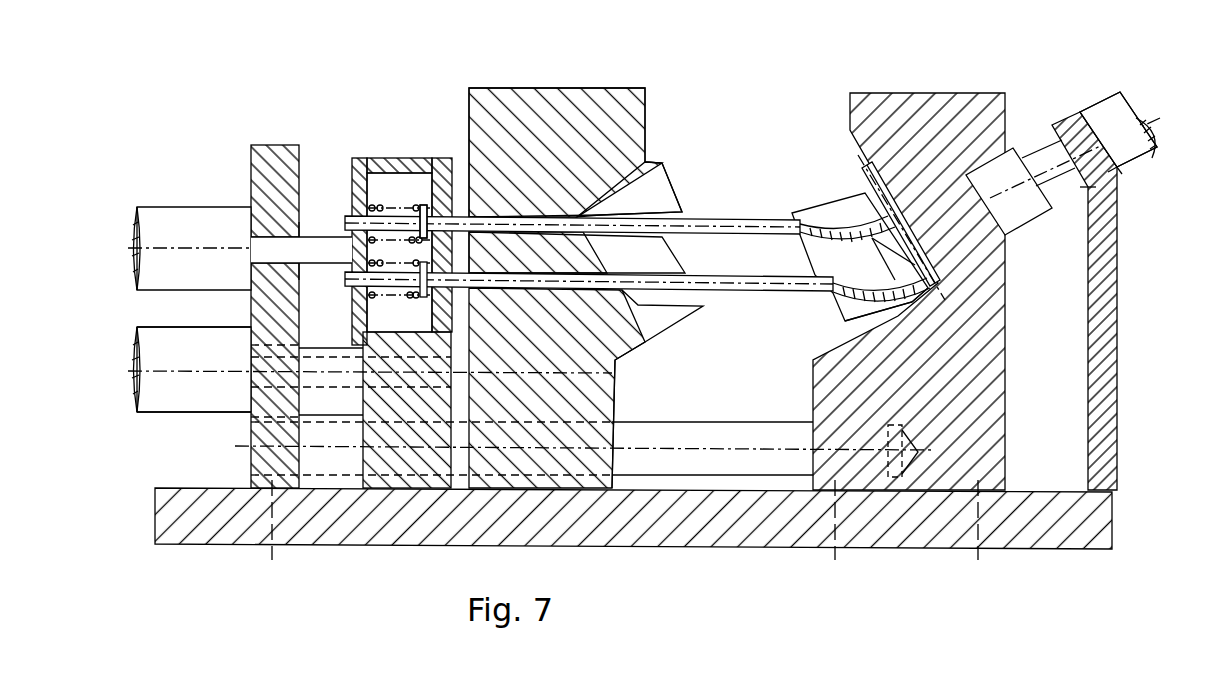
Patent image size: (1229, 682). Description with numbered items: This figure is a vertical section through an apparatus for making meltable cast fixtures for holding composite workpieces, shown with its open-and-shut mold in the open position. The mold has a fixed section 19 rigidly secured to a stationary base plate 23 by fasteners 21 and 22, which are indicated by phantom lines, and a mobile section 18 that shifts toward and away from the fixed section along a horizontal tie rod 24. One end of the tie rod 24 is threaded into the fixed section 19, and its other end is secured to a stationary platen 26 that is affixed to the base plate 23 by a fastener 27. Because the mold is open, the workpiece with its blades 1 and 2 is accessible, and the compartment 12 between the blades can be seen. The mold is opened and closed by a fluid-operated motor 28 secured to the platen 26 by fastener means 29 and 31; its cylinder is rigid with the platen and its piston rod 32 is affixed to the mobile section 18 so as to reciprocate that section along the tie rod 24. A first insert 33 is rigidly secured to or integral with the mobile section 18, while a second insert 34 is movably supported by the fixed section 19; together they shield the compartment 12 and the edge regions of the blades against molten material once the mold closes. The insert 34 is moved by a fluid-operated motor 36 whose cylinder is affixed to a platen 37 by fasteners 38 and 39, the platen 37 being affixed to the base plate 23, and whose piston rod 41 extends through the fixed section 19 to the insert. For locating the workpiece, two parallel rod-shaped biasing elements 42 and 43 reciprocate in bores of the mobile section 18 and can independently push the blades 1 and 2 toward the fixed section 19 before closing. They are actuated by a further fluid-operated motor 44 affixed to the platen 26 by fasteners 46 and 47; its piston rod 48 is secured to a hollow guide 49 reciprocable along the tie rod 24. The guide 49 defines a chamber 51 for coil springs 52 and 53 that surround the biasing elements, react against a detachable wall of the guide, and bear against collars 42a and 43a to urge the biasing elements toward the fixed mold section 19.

The blade 1 is at (830, 318).
The blade 2 is at (823, 228).
The compartment 12 is at (835, 268).
The mobile mold section 18 is at (560, 95).
The fixed mold section 19 is at (918, 95).
The fastener 21 is at (840, 545).
The fastener 22 is at (985, 548).
The base plate 23 is at (232, 540).
The tie rod 24 is at (717, 460).
The stationary platen 26 is at (265, 150).
The fastener 27 is at (280, 550).
The fluid-operated motor 28 is at (185, 408).
The fastener means 29 is at (245, 328).
The fastener means 31 is at (248, 400).
The piston rod 32 is at (318, 378).
The first insert 33 is at (660, 185).
The second insert 34 is at (852, 205).
The fluid-operated motor 36 is at (1120, 100).
The platen 37 is at (1110, 255).
The fastener 38 is at (1108, 110).
The fastener 39 is at (1123, 170).
The piston rod 41 is at (1038, 158).
The biasing element 42 is at (740, 275).
The collar 42a is at (399, 296).
The biasing element 43 is at (713, 220).
The collar 43a is at (428, 208).
The fluid-operated motor 44 is at (180, 212).
The fastener 46 is at (307, 222).
The fastener 47 is at (306, 262).
The piston rod 48 is at (320, 240).
The hollow guide 49 is at (400, 165).
The chamber 51 is at (372, 185).
The coil spring 52 is at (365, 303).
The coil spring 53 is at (425, 203).